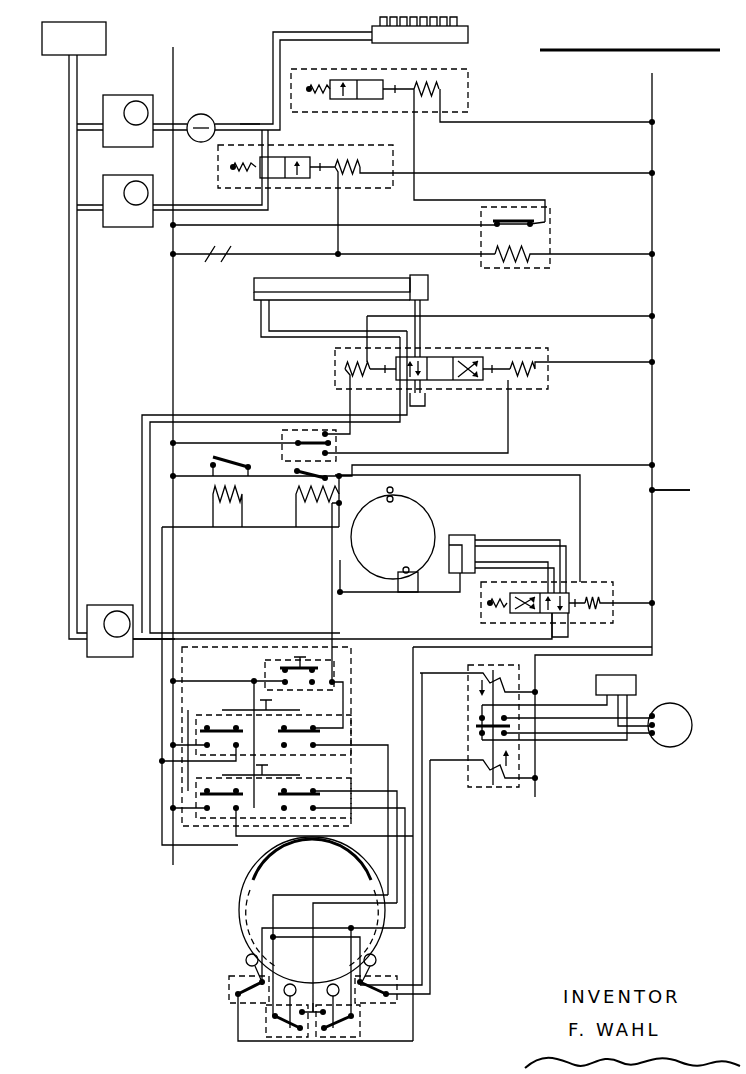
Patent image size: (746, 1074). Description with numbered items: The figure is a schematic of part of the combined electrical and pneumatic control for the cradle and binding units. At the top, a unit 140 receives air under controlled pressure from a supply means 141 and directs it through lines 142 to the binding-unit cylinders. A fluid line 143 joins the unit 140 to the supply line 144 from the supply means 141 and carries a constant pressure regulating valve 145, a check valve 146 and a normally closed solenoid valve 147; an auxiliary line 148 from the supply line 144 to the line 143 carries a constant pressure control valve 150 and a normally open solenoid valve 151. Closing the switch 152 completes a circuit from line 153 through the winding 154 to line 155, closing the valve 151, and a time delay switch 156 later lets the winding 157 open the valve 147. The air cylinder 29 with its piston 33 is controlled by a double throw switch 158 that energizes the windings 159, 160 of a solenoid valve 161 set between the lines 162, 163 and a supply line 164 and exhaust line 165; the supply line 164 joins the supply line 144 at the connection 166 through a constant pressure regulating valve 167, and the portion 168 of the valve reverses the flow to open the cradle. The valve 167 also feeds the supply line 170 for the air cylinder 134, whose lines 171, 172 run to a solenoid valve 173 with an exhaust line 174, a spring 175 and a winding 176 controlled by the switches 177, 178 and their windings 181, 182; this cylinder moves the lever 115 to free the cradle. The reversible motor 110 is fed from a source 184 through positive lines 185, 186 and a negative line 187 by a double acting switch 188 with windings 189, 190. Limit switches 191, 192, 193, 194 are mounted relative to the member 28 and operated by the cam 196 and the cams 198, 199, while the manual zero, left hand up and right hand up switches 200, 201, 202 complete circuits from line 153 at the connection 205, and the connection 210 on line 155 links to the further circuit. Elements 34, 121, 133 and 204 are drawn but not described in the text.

The member of the cradle 28 is at (420, 514).
The air cylinder 29 is at (343, 280).
The piston 33 is at (417, 280).
The conduit 34 is at (256, 298).
The motor 110 is at (672, 748).
The lever 115 is at (372, 595).
The terminal 121 is at (340, 590).
The motor terminal box 133 is at (418, 576).
The air cylinder 134 is at (462, 535).
The unit 140 is at (425, 40).
The supply means 141 is at (100, 33).
The lines 142 is at (378, 20).
The fluid line 143 is at (252, 114).
The supply line 144 is at (68, 142).
The constant pressure regulating valve 145 is at (136, 95).
The check valve 146 is at (203, 114).
The solenoid valve 147 is at (305, 75).
The auxiliary line 148 is at (206, 205).
The constant pressure control valve 150 is at (156, 176).
The solenoid valve 151 is at (305, 196).
The switch 152 is at (218, 270).
The line 153 is at (174, 70).
The winding 154 is at (358, 166).
The line 155 is at (653, 100).
The time delay switch 156 is at (545, 230).
The winding 157 is at (440, 86).
The double throw switch 158 is at (282, 436).
The winding 159 is at (363, 374).
The winding 160 is at (525, 374).
The solenoid valve 161 is at (520, 348).
The line 162 is at (293, 343).
The line 163 is at (422, 326).
The supply line 164 is at (400, 422).
The exhaust line 165 is at (422, 406).
The connection 166 is at (150, 648).
The constant pressure regulating valve 167 is at (112, 611).
The portion of the valve 168 is at (468, 398).
The supply line 170 is at (400, 636).
The line 171 is at (512, 562).
The line 172 is at (530, 540).
The solenoid valve 173 is at (595, 582).
The exhaust line 174 is at (569, 628).
The spring 175 is at (504, 606).
The winding 176 is at (596, 602).
The switch 177 is at (235, 460).
The switch 178 is at (296, 480).
The winding 181 is at (211, 492).
The winding 182 is at (336, 494).
The source 184 is at (637, 682).
The positive line 185 is at (568, 704).
The positive line 186 is at (576, 748).
The negative line 187 is at (625, 708).
The double acting switch 188 is at (468, 710).
The winding 189 is at (496, 672).
The winding 190 is at (494, 780).
The limit switch 191 is at (229, 994).
The limit switch 192 is at (388, 978).
The limit switch 193 is at (265, 1036).
The limit switch 194 is at (362, 1036).
The cam 196 is at (355, 862).
The cam 198 is at (248, 926).
The cam 199 is at (372, 926).
The zero switch 200 is at (268, 664).
The left hand up switch 201 is at (290, 708).
The right hand up switch 202 is at (308, 782).
The contact 204 is at (278, 940).
The connection 205 is at (173, 681).
The connection 210 is at (671, 479).